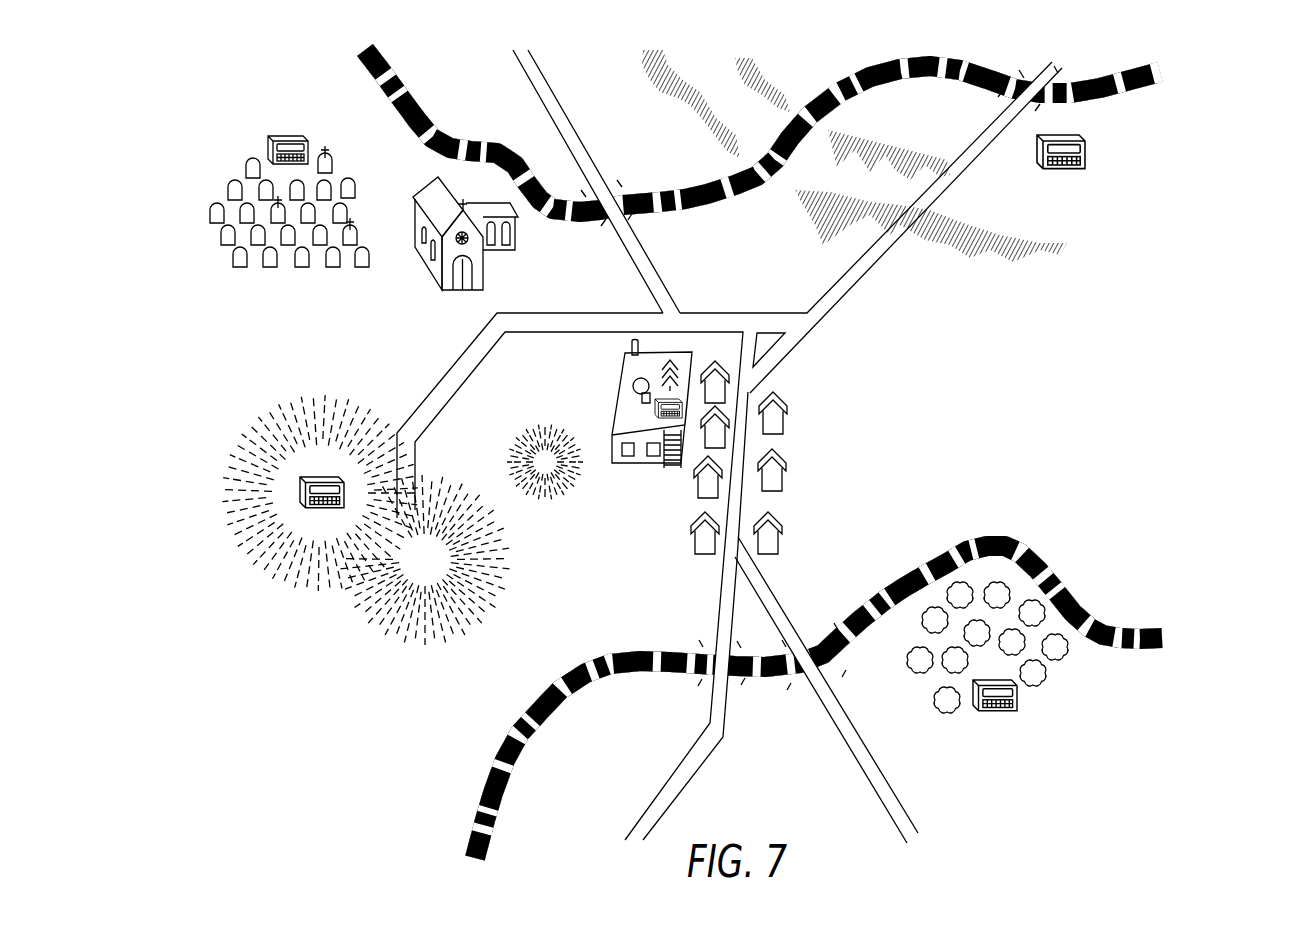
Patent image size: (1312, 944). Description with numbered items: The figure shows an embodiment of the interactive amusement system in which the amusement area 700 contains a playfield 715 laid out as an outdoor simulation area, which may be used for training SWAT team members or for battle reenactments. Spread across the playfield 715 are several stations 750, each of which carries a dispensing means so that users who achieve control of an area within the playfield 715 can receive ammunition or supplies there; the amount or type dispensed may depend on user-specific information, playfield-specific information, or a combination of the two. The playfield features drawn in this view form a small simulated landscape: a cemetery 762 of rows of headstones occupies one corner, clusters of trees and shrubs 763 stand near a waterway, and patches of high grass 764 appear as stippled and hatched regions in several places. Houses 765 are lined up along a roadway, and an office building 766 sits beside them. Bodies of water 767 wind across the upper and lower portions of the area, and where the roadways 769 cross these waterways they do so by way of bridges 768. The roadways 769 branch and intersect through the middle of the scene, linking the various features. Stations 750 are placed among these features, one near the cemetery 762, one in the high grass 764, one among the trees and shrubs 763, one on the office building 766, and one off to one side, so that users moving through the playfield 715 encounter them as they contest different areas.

The amusement area 700 is at (1192, 297).
The playfield 715 is at (922, 428).
The station 750 is at (284, 135).
The cemetery 762 is at (224, 236).
The trees and shrubs 763 is at (1048, 675).
The high grass 764 is at (823, 233).
The houses 765 is at (780, 538).
The office buildings 766 is at (615, 380).
The bodies of water 767 is at (678, 192).
The bridges 768 is at (623, 223).
The roadways 769 is at (745, 393).